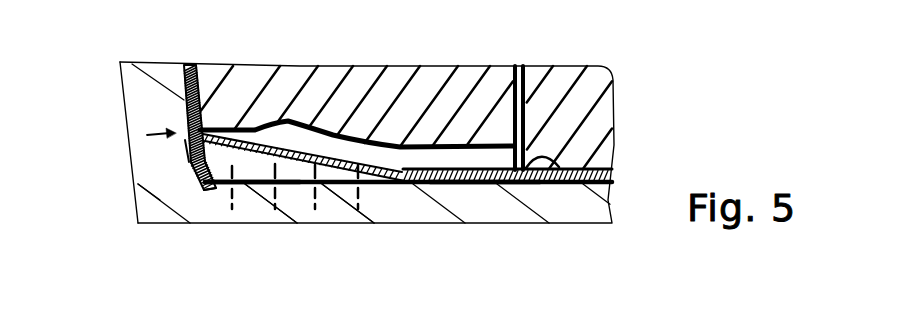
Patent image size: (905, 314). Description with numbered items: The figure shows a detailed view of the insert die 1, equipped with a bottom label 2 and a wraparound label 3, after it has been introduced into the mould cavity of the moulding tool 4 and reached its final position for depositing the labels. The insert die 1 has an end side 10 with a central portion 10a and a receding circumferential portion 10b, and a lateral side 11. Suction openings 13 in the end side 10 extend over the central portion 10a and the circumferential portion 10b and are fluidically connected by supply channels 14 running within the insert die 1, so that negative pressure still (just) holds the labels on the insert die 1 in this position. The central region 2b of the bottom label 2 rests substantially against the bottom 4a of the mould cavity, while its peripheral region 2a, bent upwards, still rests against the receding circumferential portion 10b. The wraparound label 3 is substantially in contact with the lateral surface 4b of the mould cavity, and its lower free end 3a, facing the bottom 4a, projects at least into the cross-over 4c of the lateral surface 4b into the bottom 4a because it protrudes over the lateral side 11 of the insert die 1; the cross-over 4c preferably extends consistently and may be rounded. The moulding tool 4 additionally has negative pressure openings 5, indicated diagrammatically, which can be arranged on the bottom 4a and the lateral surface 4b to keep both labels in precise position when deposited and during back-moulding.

The insert die 1 is at (611, 65).
The bottom label 2 is at (405, 184).
The peripheral region of the bottom label 2a is at (260, 184).
The central region of the bottom label 2b is at (458, 185).
The wraparound label 3 is at (191, 153).
The free end of the wraparound label 3a is at (197, 178).
The moulding tool 4 is at (150, 180).
The bottom of the mould cavity 4a is at (295, 183).
The lateral surface of the mould cavity 4b is at (183, 117).
The cross-over of the lateral surface into the bottom 4c is at (205, 182).
The negative pressure openings 5 is at (147, 134).
The end side of the insert die 10 is at (476, 94).
The central portion of the end side 10a is at (585, 168).
The circumferential portion of the end side 10b is at (258, 120).
The lateral side of the insert die 11 is at (210, 80).
The suction openings 13 is at (412, 145).
The supply channels 14 is at (534, 70).